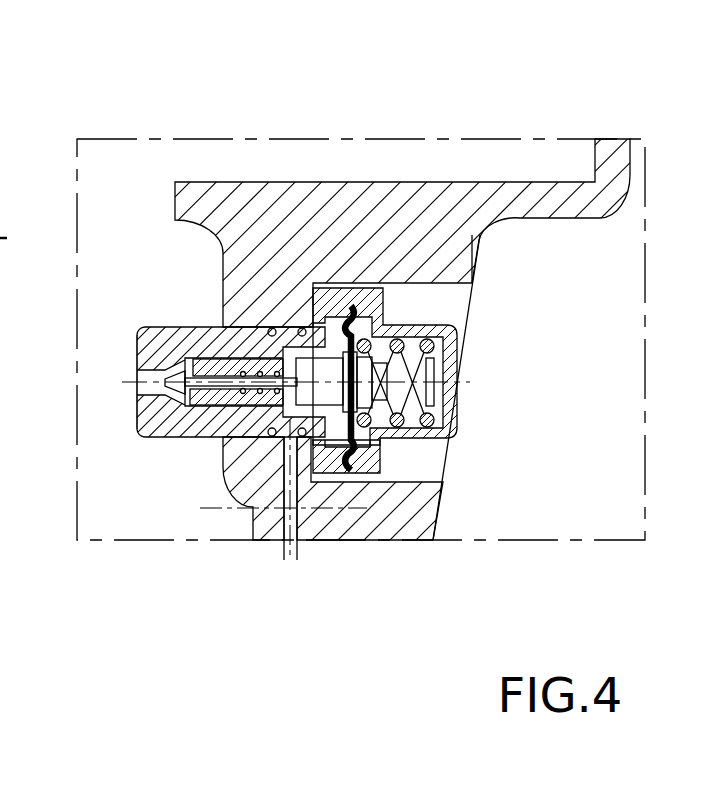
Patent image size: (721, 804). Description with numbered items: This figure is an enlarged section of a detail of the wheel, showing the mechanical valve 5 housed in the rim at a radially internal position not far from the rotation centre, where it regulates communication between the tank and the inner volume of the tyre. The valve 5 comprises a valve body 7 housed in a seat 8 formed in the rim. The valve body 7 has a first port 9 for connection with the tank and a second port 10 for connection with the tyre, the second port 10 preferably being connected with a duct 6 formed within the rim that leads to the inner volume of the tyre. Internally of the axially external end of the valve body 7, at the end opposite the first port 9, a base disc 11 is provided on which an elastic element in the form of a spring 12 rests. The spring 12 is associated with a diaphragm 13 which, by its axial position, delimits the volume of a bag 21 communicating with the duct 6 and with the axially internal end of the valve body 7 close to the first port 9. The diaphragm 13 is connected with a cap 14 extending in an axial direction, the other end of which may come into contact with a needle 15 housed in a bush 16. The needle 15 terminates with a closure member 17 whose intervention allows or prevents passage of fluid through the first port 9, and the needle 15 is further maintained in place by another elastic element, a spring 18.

The mechanical valve 5 is at (472, 469).
The duct 6 is at (280, 545).
The valve body 7 is at (455, 330).
The seat 8 is at (435, 300).
The first port 9 is at (138, 377).
The second port 10 is at (227, 478).
The base disc 11 is at (447, 378).
The spring 12 is at (453, 433).
The diaphragm 13 is at (362, 478).
The cap 14 is at (330, 478).
The needle 15 is at (230, 358).
The bush 16 is at (167, 437).
The closure member 17 is at (174, 350).
The spring 18 is at (261, 356).
The bag 21 is at (333, 330).